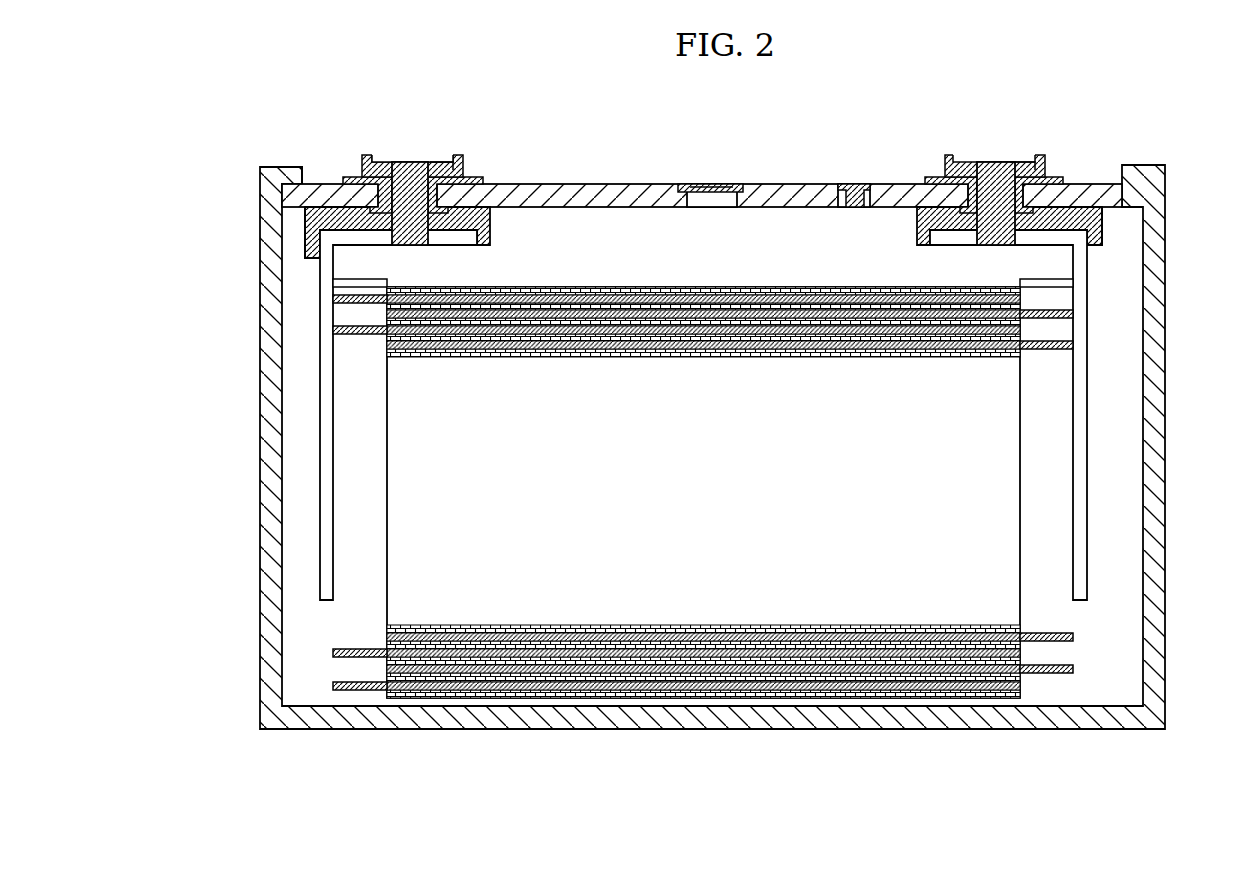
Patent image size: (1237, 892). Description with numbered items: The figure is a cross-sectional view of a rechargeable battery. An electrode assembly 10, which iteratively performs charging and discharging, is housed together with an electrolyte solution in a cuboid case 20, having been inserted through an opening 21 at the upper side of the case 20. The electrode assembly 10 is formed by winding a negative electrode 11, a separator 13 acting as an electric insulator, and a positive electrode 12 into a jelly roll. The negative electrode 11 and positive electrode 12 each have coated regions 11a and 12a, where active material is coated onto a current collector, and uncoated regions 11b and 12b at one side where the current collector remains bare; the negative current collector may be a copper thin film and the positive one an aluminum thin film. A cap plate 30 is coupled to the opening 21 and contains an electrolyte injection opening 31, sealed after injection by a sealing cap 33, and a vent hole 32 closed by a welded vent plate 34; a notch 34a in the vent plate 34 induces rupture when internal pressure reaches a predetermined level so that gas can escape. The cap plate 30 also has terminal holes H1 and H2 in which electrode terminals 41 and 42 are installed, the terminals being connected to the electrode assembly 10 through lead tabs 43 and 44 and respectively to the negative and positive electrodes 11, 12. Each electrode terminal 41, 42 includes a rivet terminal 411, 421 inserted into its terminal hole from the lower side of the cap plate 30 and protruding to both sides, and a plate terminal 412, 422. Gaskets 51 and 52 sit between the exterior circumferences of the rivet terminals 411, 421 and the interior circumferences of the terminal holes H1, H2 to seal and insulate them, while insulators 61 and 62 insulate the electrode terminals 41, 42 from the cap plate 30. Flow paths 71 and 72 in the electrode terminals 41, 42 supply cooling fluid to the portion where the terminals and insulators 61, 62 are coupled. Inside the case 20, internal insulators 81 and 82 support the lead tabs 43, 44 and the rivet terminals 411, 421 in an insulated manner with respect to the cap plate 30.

The electrode assembly 10 is at (703, 545).
The negative electrode 11 is at (676, 553).
The coated region 11a is at (460, 690).
The uncoated region 11b is at (364, 534).
The positive electrode 12 is at (730, 561).
The coated region 12a is at (952, 690).
The uncoated region 12b is at (1046, 542).
The separator 13 is at (688, 690).
The case 20 is at (1153, 453).
The opening 21 is at (285, 180).
The cap plate 30 is at (788, 196).
The electrolyte injection opening 31 is at (843, 182).
The vent hole 32 is at (716, 198).
The sealing cap 33 is at (858, 182).
The vent plate 34 is at (738, 182).
The notch 34a is at (700, 184).
The electrode terminal 41 is at (447, 166).
The rivet terminal 411 is at (410, 168).
The plate terminal 412 is at (457, 155).
The electrode terminal 42 is at (1026, 166).
The rivet terminal 421 is at (988, 167).
The plate terminal 422 is at (1038, 154).
The lead tab 43 is at (320, 403).
The lead tab 44 is at (1082, 526).
The gasket 51 is at (385, 212).
The gasket 52 is at (968, 202).
The insulator 61 is at (378, 197).
The insulator 62 is at (938, 177).
The flow path 71 is at (452, 166).
The flow path 72 is at (1027, 160).
The internal insulator 81 is at (330, 215).
The internal insulator 82 is at (1103, 235).
The terminal hole H1 is at (421, 182).
The terminal hole H2 is at (1003, 181).